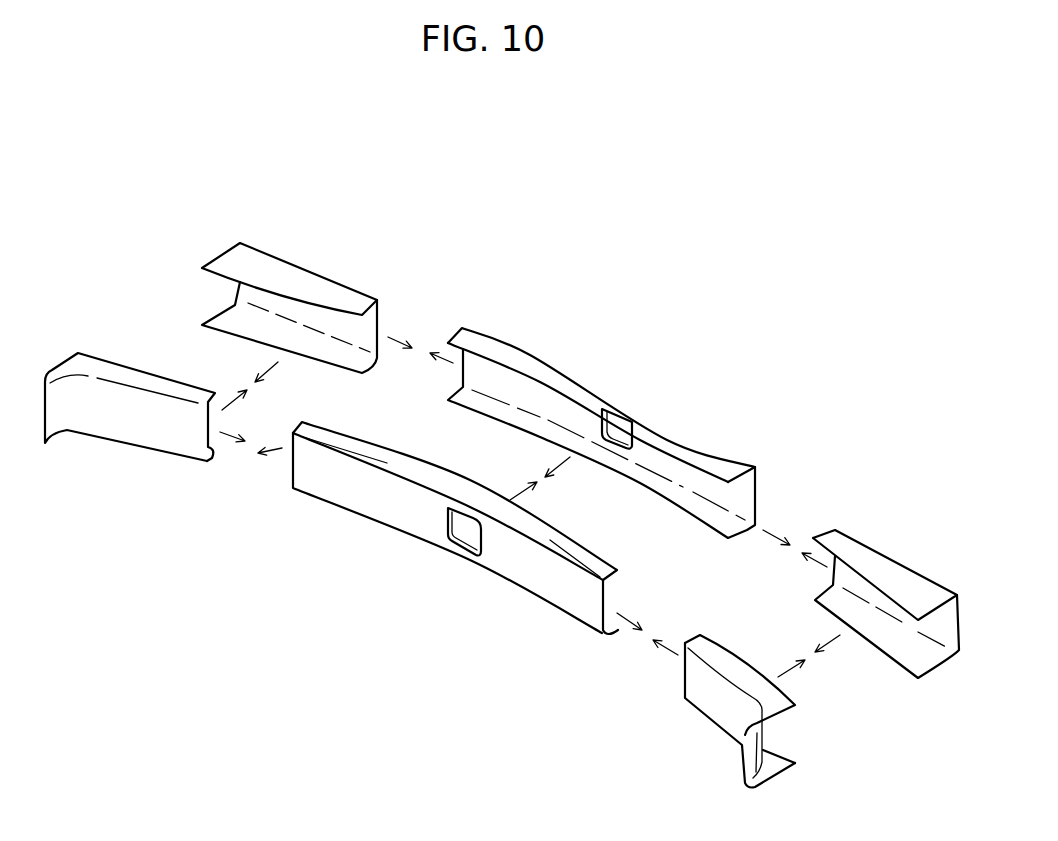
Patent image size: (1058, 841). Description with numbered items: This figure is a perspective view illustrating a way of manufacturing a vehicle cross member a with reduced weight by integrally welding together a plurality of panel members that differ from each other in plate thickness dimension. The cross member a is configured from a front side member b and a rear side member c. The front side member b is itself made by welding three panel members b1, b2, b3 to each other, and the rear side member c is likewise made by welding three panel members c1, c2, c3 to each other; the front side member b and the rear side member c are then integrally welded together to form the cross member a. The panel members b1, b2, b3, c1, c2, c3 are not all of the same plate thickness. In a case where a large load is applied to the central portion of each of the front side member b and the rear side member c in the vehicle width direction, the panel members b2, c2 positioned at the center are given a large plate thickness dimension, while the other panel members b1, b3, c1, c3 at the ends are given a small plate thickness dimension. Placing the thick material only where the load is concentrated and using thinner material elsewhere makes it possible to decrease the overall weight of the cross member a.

The cross member a is at (305, 107).
The front side member b is at (160, 537).
The panel member b1 is at (188, 442).
The panel member b2 is at (423, 523).
The panel member b3 is at (708, 692).
The rear side member c is at (906, 438).
The panel member c1 is at (352, 297).
The panel member c2 is at (630, 410).
The panel member c3 is at (857, 557).